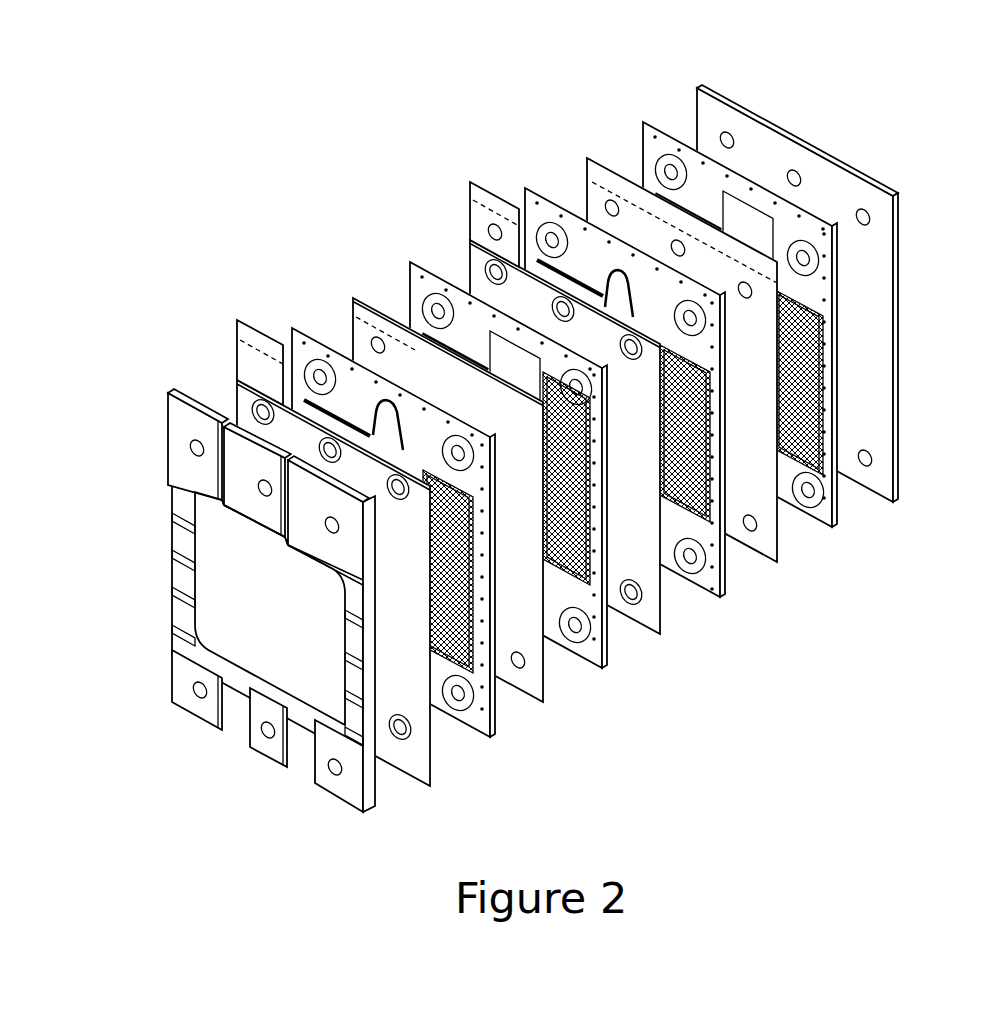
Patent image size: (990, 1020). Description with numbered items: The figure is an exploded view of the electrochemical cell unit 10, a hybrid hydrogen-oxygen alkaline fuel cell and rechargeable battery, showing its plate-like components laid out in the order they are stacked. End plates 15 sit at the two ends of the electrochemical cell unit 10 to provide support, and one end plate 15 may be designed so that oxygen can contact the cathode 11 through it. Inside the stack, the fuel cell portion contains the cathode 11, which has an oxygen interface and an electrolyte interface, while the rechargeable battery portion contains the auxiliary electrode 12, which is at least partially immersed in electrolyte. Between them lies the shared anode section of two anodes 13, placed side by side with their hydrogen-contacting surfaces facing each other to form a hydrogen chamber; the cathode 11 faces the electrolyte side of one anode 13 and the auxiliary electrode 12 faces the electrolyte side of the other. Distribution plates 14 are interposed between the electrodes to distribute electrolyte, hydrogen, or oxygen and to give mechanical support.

The electrochemical cell unit 10 is at (305, 128).
The cathode 11 is at (290, 534).
The auxiliary electrode 12 is at (642, 323).
The anode 13 is at (456, 423).
The distribution plate 14 is at (606, 450).
The end plate 15 is at (533, 439).